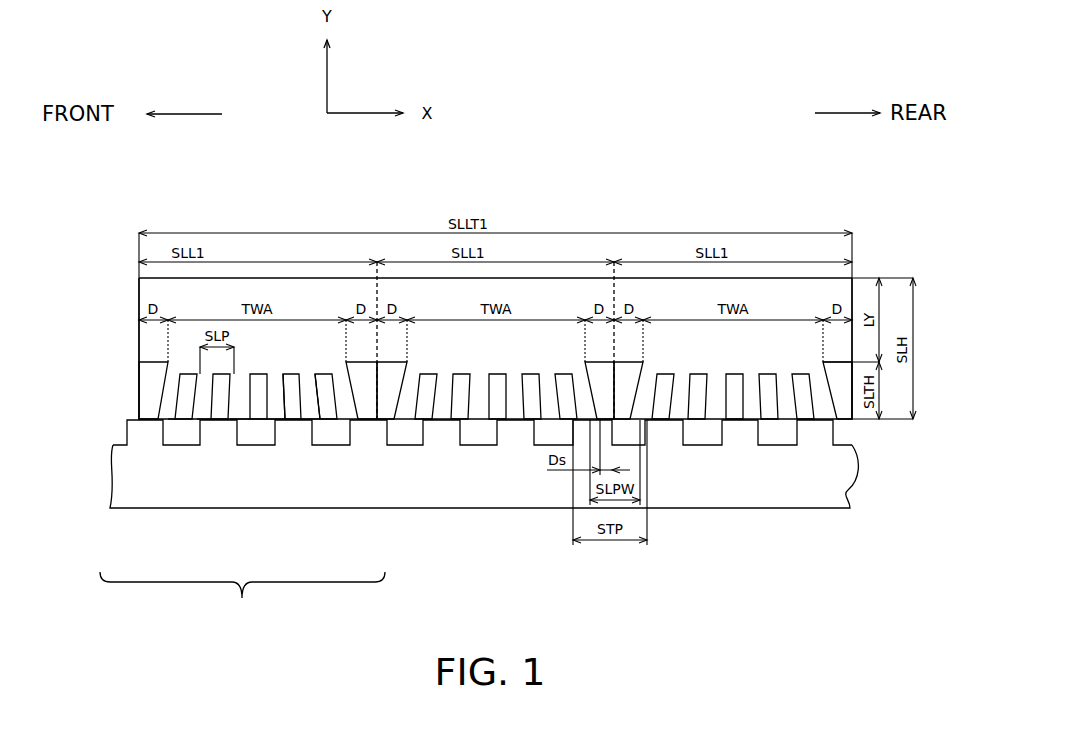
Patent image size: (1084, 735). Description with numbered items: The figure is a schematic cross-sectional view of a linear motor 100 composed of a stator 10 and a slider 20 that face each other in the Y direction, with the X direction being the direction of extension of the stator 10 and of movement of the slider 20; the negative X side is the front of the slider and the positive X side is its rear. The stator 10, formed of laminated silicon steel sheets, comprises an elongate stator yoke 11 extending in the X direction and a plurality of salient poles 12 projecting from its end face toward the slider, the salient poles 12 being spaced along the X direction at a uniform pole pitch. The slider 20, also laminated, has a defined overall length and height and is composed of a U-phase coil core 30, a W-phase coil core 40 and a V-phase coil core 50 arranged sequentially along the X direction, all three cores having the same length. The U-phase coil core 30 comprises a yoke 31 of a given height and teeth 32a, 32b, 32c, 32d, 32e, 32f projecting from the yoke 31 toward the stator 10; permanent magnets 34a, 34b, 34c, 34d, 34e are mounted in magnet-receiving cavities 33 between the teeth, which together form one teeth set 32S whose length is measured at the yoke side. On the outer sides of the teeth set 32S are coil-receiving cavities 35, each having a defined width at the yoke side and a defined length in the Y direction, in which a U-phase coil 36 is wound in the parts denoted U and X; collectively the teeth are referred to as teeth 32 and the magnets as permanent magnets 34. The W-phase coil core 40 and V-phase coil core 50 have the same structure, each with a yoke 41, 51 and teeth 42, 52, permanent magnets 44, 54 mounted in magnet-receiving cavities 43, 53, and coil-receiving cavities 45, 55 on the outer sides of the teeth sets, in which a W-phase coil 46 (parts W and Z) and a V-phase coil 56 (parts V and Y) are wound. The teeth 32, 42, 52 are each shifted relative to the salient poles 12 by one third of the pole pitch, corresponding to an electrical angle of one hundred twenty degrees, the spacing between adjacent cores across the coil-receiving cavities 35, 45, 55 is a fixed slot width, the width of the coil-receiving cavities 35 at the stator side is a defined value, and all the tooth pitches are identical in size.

The linear motor 100 is at (706, 222).
The stator 10 is at (855, 483).
The stator yoke 11 is at (802, 487).
The salient poles 12 is at (822, 435).
The slider 20 is at (853, 277).
The U-phase coil core 30 is at (218, 276).
The yoke 31 is at (160, 292).
The teeth 32 is at (272, 385).
The tooth 32a is at (152, 415).
The tooth 32b is at (184, 415).
The tooth 32c is at (220, 415).
The tooth 32d is at (258, 415).
The tooth 32e is at (293, 415).
The tooth 32f is at (328, 415).
The teeth set 32S is at (242, 597).
The magnet-receiving cavities 33 is at (293, 388).
The permanent magnets 34 is at (312, 377).
The permanent magnet 34a is at (174, 415).
The permanent magnet 34b is at (205, 415).
The permanent magnet 34c is at (240, 415).
The permanent magnet 34d is at (275, 415).
The permanent magnet 34e is at (307, 415).
The coil-receiving cavities 35 is at (152, 362).
The U-phase coil 36 is at (143, 392).
The W-phase coil core 40 is at (582, 276).
The yoke 41 is at (433, 292).
The teeth 42 is at (508, 385).
The magnet-receiving cavities 43 is at (533, 383).
The permanent magnets 44 is at (545, 378).
The coil-receiving cavities 45 is at (388, 382).
The W-phase coil 46 is at (407, 358).
The V-phase coil core 50 is at (670, 276).
The yoke 51 is at (827, 292).
The teeth 52 is at (747, 387).
The magnet-receiving cavities 53 is at (772, 390).
The permanent magnets 54 is at (790, 385).
The coil-receiving cavities 55 is at (612, 380).
The V-phase coil 56 is at (630, 383).